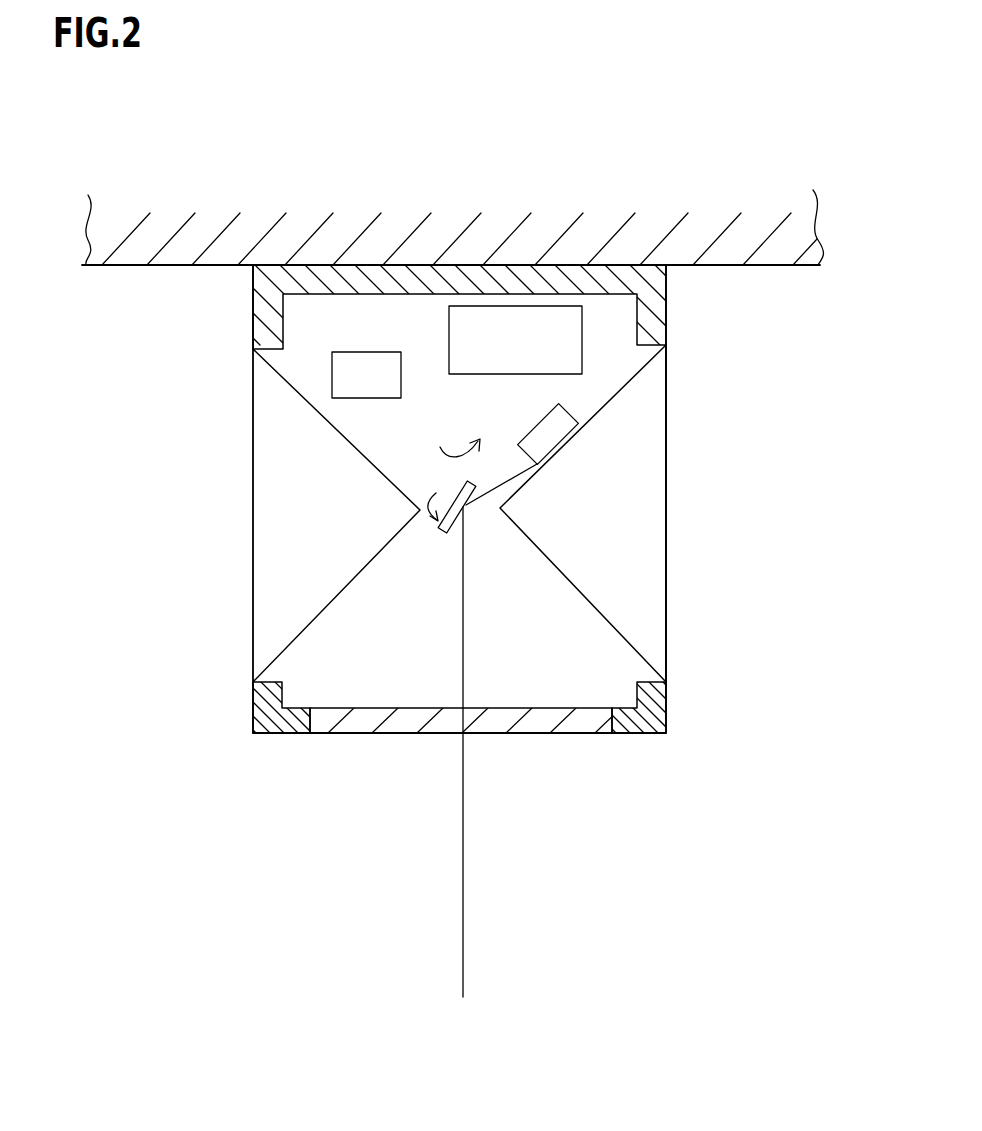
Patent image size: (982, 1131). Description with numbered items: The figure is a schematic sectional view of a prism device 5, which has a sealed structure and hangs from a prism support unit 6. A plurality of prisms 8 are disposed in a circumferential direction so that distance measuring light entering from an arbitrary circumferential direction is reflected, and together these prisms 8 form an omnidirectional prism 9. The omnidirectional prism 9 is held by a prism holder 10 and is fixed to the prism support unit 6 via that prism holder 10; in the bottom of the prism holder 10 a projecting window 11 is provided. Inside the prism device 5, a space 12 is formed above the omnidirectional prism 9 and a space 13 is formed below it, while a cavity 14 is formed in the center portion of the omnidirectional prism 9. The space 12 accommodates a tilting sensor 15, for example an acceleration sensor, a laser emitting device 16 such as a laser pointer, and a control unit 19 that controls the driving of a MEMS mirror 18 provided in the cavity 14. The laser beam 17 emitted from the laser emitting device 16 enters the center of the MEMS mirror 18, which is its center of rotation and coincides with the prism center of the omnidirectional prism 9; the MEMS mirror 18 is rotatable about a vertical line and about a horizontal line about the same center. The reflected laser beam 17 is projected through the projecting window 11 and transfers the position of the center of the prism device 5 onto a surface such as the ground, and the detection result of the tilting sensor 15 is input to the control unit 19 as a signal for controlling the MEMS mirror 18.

The prism device 5 is at (698, 592).
The prism support unit 6 is at (765, 265).
The prisms 8 is at (666, 517).
The omnidirectional prism 9 is at (668, 483).
The prism holder 10 is at (252, 297).
The projecting window 11 is at (537, 734).
The space 12 is at (392, 432).
The space 13 is at (343, 645).
The cavity 14 is at (485, 512).
The tilting sensor 15 is at (347, 351).
The laser emitting device 16 is at (580, 416).
The laser beam 17 is at (463, 893).
The MEMS mirror 18 is at (443, 537).
The control unit 19 is at (477, 306).